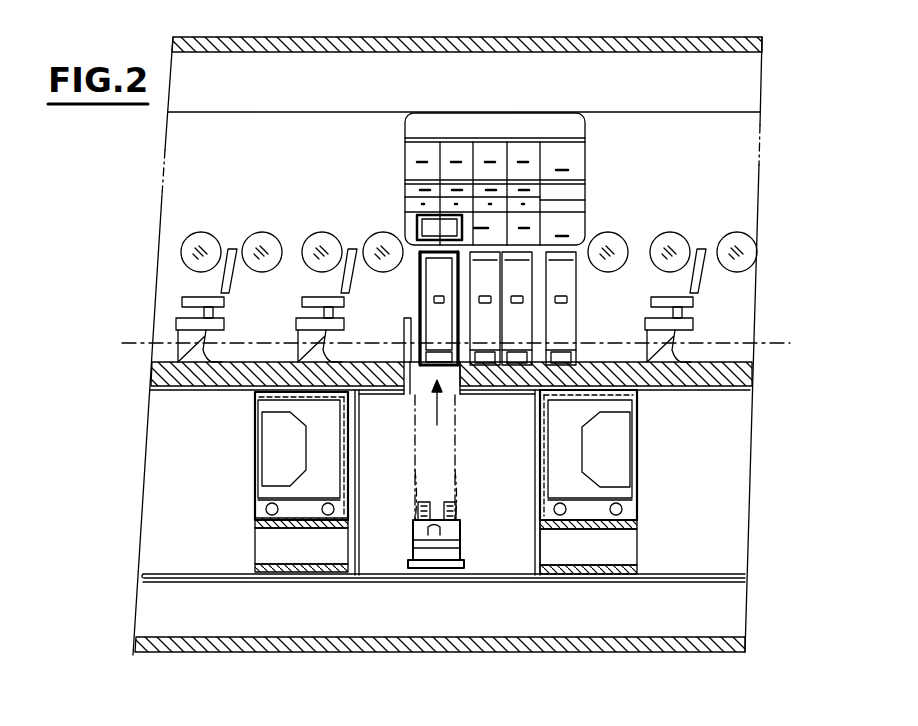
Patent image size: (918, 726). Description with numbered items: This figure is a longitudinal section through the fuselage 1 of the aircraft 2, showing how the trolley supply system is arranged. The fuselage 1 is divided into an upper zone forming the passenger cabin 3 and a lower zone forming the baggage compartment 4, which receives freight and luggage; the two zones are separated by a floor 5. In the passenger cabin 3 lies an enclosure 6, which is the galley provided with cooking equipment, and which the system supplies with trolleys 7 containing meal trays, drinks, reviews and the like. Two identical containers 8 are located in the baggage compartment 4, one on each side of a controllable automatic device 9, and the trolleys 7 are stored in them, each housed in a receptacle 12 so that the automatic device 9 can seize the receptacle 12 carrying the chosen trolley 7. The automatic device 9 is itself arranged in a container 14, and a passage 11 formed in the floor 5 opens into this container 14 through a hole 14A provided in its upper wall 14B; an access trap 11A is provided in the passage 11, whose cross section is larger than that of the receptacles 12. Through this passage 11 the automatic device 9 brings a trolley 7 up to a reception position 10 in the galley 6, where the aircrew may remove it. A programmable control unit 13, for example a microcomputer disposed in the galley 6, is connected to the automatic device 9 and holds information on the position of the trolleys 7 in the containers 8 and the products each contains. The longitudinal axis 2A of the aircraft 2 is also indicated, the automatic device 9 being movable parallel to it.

The fuselage 1 is at (232, 40).
The aircraft 2 is at (735, 36).
The passenger cabin 3 is at (180, 212).
The baggage compartment 4 is at (172, 528).
The floor 5 is at (152, 356).
The enclosure 6 is at (406, 148).
The trolley 7 is at (432, 272).
The container 8 is at (246, 474).
The controllable automatic device 9 is at (464, 533).
The reception position 10 is at (393, 240).
The passage 11 is at (457, 396).
The access trap 11A is at (402, 328).
The receptacle 12 is at (418, 302).
The programmable control unit 13 is at (442, 226).
The container 14 is at (383, 576).
The hole 14A is at (412, 396).
The upper wall 14B is at (512, 400).
The longitudinal axis 2A is at (775, 346).